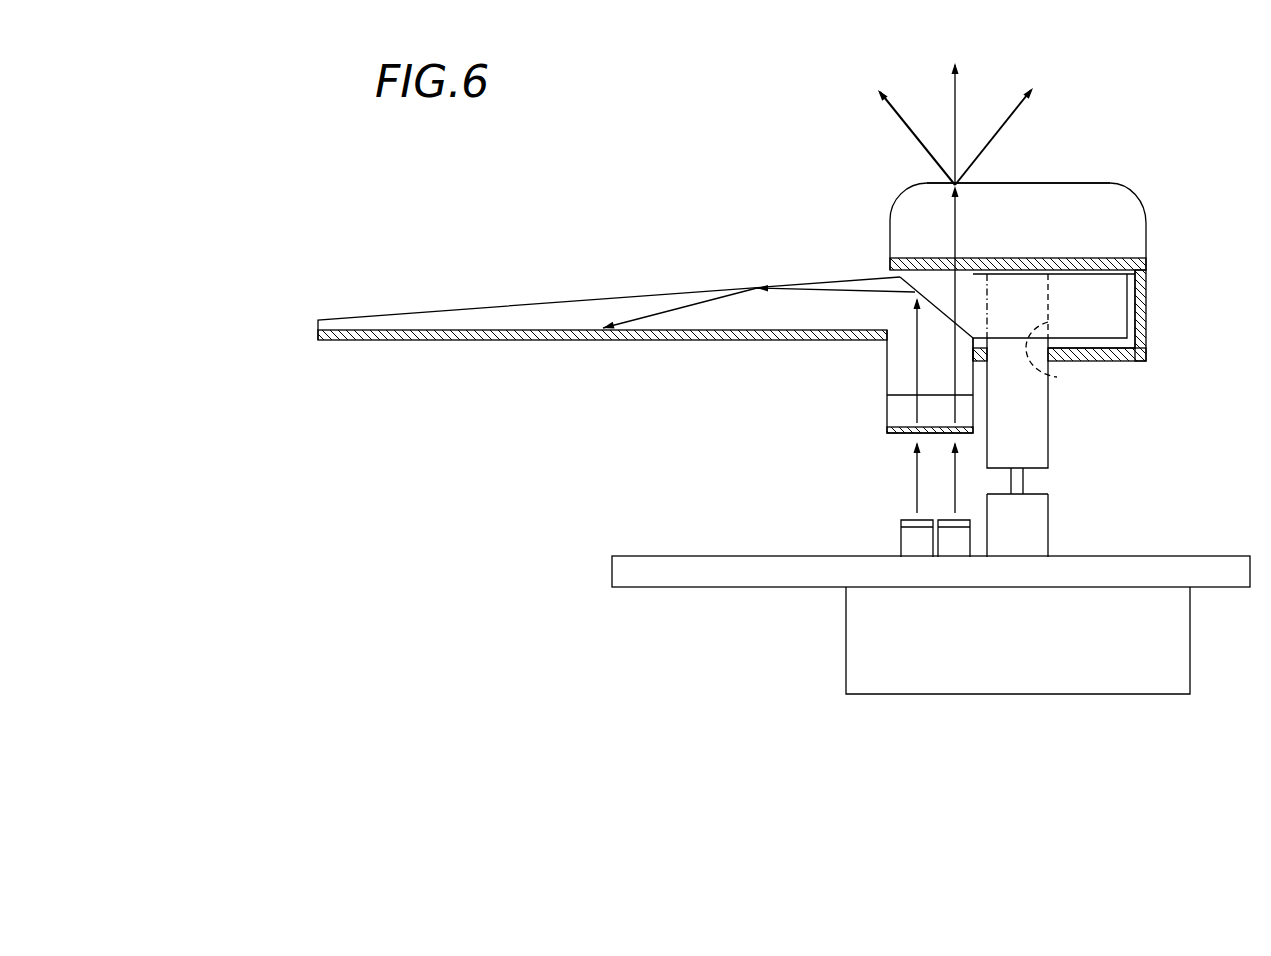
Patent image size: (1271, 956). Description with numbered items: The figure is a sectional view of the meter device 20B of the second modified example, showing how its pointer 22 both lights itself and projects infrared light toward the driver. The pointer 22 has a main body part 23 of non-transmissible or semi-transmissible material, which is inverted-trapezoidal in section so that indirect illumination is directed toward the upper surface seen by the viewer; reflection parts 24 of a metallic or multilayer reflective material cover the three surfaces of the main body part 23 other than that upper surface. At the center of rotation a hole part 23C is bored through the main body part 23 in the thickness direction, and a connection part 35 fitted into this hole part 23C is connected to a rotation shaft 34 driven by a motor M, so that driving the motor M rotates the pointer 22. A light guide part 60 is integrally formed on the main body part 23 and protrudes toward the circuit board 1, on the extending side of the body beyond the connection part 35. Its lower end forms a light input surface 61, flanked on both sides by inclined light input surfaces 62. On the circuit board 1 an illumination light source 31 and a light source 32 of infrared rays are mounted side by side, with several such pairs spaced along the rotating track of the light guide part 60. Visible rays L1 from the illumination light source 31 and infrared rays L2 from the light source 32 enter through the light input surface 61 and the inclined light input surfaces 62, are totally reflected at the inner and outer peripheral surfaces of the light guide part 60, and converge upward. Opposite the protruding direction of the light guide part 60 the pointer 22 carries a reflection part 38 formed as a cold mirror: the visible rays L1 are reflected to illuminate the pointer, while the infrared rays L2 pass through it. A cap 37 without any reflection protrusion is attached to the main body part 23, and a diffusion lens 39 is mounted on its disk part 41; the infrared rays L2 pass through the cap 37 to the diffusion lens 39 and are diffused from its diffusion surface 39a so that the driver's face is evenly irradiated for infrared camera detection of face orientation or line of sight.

The meter device 20B is at (598, 168).
The pointer 22 is at (809, 254).
The main body part 23 is at (555, 302).
The hole part 23C is at (1057, 377).
The reflection part 24 is at (558, 340).
The illumination light source 31 is at (900, 538).
The light source of infrared rays 32 is at (970, 535).
The rotation shaft 34 is at (1023, 480).
The connection part 35 is at (1048, 437).
The cap 37 is at (1146, 312).
The reflection part 38 is at (928, 297).
The diffusion lens 39 is at (1146, 228).
The diffusion surface 39a is at (1068, 182).
The disk part 41 is at (1090, 257).
The light guide part 60 is at (883, 368).
The light input surface 61 is at (907, 435).
The inclined light input surface 62 is at (897, 412).
The circuit board 1 is at (680, 587).
The motor M is at (1190, 663).
The visible rays L1 is at (757, 288).
The infrared rays L2 is at (957, 105).